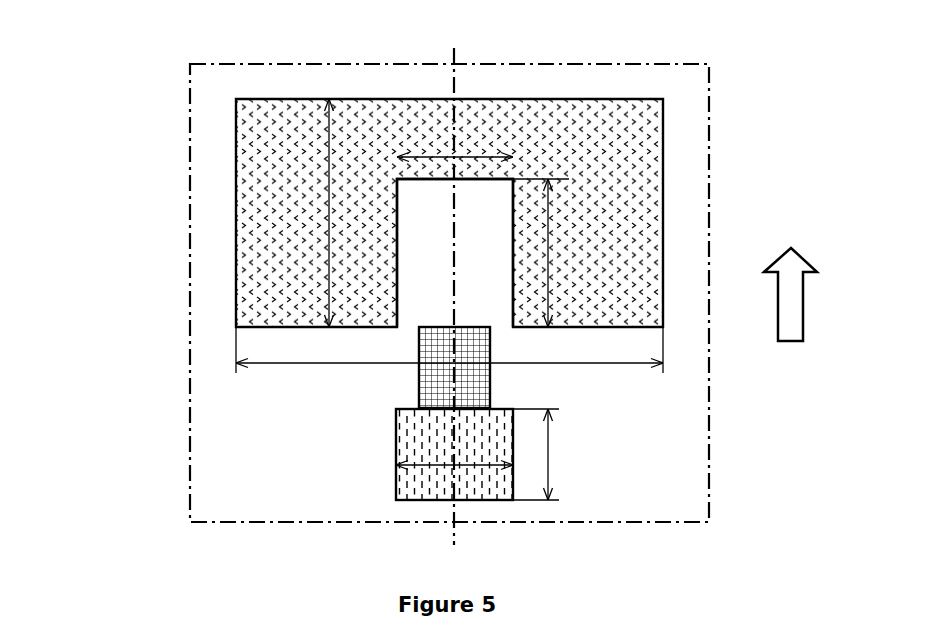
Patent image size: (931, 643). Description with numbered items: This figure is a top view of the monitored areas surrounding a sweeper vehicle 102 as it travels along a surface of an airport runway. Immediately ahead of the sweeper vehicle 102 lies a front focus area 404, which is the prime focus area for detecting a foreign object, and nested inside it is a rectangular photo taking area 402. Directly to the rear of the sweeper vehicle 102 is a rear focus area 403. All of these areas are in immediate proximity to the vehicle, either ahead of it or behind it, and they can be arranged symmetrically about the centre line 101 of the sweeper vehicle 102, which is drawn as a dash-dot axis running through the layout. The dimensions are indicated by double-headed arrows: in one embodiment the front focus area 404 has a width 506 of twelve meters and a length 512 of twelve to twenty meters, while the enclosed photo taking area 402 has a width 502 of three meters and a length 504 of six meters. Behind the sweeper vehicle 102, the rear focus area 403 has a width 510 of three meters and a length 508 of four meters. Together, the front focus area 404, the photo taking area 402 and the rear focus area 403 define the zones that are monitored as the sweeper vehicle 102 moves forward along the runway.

The centre line 101 is at (443, 260).
The sweeper vehicle 102 is at (420, 387).
The photo taking area 402 is at (493, 197).
The rear focus area 403 is at (493, 418).
The front focus area 404 is at (260, 122).
The width of photo taking area 502 is at (430, 143).
The length of photo taking area 504 is at (560, 256).
The width of front focus area 506 is at (328, 375).
The length of rear focus area 508 is at (560, 453).
The width of rear focus area 510 is at (433, 472).
The length of front focus area 512 is at (317, 192).